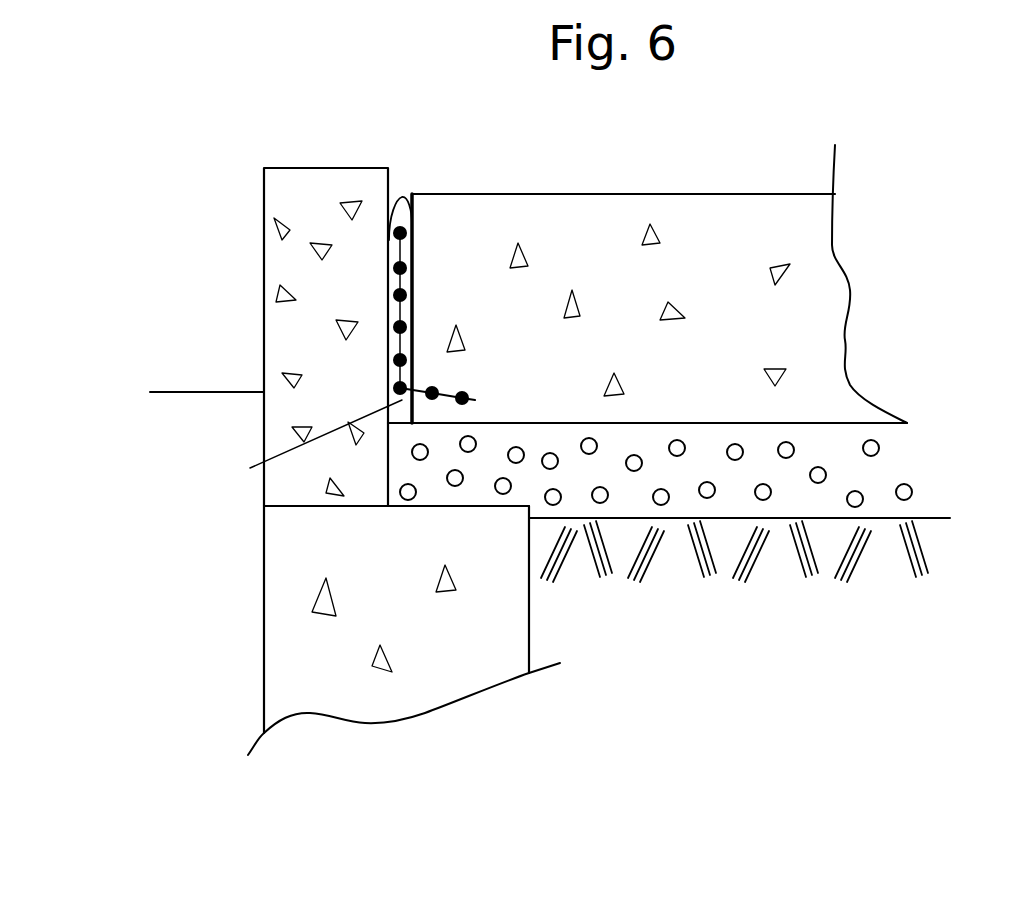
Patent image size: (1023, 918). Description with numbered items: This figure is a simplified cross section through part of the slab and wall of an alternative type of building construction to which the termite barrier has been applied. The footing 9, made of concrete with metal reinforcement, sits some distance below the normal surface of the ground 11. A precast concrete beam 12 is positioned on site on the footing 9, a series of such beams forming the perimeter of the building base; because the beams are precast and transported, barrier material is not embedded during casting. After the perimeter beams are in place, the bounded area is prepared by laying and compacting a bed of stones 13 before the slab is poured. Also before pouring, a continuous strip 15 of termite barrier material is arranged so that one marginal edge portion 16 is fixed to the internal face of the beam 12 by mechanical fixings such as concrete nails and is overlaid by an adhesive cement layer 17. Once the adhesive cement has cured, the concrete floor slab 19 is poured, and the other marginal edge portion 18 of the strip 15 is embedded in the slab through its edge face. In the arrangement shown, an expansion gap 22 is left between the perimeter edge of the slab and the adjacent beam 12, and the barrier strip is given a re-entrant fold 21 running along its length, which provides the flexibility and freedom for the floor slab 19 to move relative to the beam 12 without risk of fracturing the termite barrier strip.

The footing 9 is at (462, 658).
The normal surface of the ground 11 is at (205, 392).
The concrete beam 12 is at (357, 175).
The bed of stones 13 is at (920, 465).
The continuous strip of termite barrier material 15 is at (412, 362).
The marginal edge portion 16 is at (398, 246).
The adhesive cement layer 17 is at (405, 212).
The other marginal edge portion 18 is at (462, 392).
The concrete floor slab 19 is at (723, 253).
The re-entrant fold 21 is at (412, 320).
The expansion gap 22 is at (296, 449).